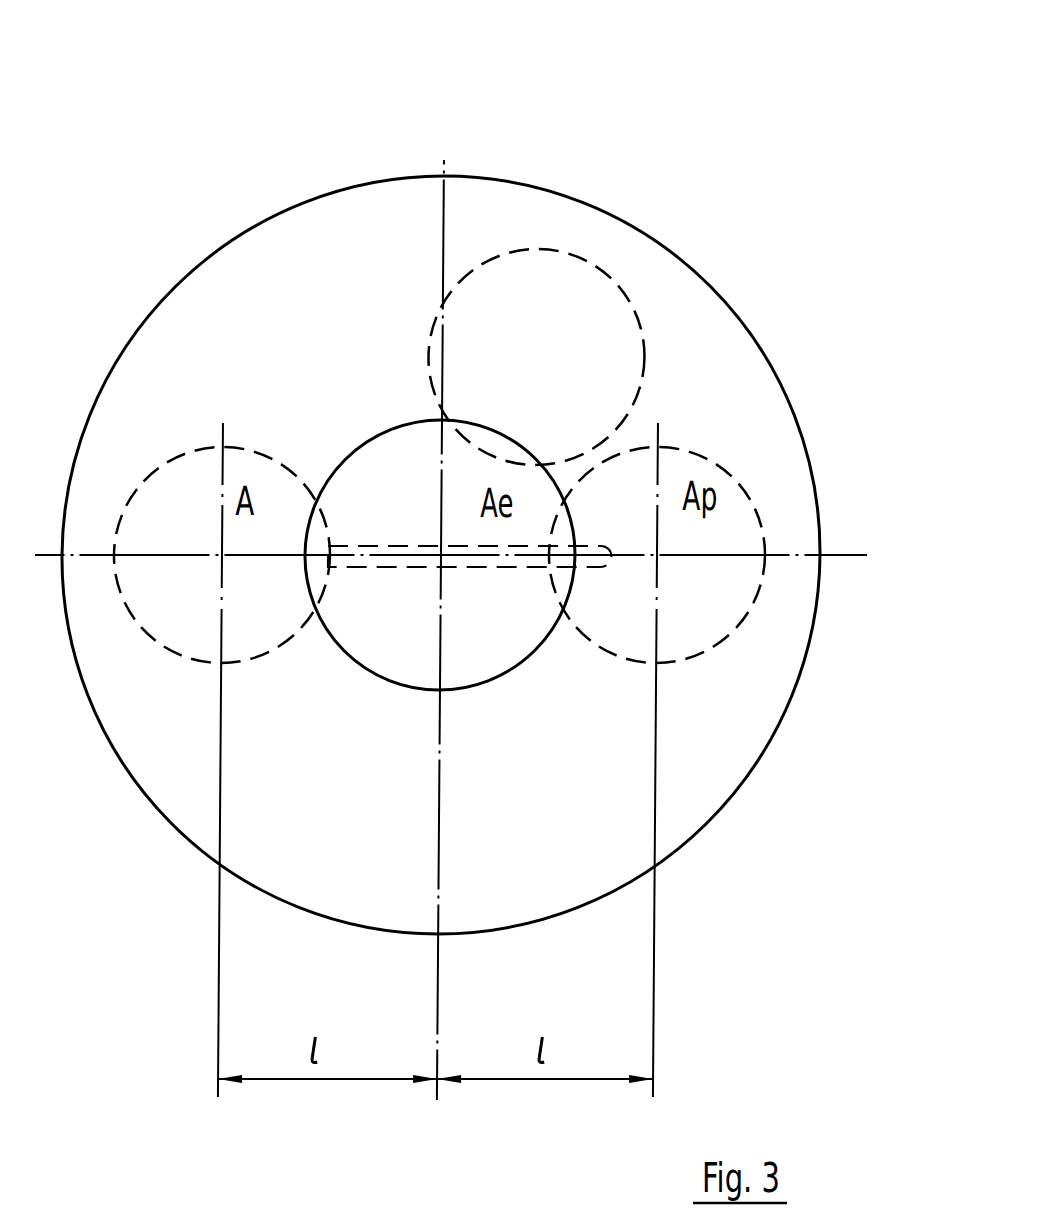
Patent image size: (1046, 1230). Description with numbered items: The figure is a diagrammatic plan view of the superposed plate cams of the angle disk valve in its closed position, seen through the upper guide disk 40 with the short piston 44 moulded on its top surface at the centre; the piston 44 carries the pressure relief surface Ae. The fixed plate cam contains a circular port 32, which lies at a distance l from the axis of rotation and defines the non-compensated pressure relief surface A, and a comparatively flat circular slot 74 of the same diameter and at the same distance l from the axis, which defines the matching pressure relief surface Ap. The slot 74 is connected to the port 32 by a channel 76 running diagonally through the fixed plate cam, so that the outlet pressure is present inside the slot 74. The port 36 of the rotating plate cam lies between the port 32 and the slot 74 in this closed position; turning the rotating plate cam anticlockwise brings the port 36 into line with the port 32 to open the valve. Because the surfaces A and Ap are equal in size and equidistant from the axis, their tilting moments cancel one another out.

The guide disk 40 is at (737, 377).
The piston 44 is at (415, 450).
The port 36 is at (516, 251).
The port 32 is at (155, 642).
The slot 74 is at (748, 479).
The channel 76 is at (372, 561).